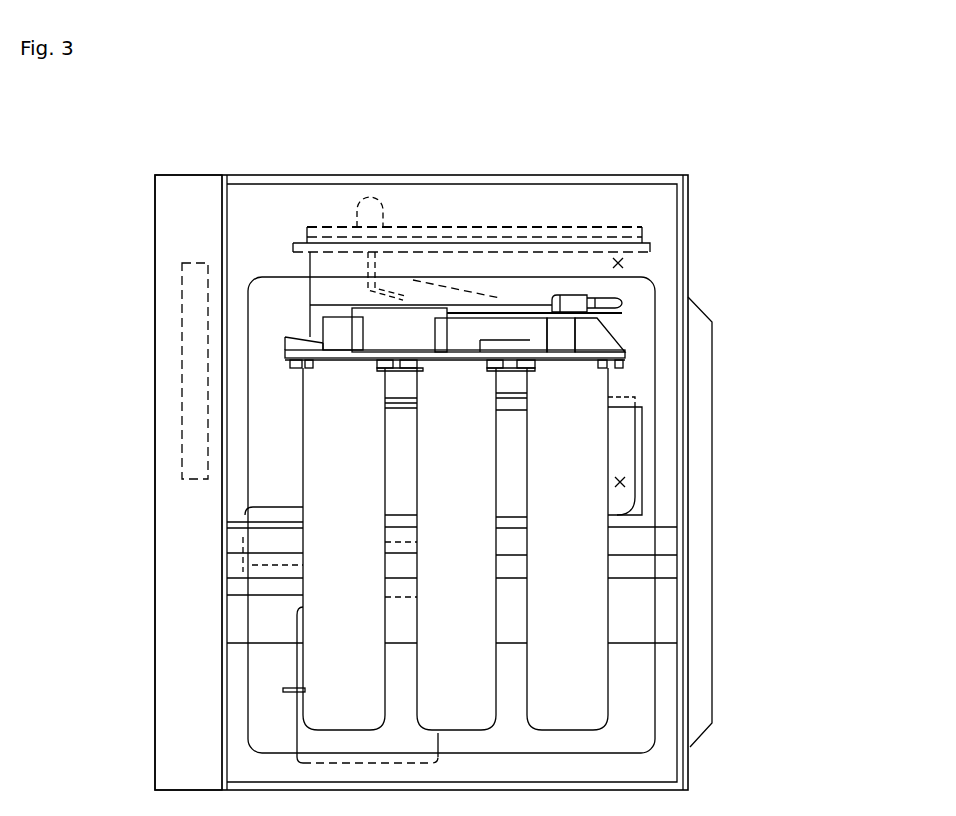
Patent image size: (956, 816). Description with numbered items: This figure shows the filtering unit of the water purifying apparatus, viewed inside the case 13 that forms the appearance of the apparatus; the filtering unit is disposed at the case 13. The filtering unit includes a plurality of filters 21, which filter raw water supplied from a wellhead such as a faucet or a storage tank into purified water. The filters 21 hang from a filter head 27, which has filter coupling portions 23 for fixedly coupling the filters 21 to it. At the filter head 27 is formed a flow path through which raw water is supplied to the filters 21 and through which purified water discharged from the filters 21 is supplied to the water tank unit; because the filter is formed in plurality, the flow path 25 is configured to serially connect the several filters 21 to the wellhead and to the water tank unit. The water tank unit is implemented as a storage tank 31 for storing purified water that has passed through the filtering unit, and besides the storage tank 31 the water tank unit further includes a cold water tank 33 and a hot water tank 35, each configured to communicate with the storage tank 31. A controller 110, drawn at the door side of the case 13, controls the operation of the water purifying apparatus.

The case 13 is at (132, 482).
The controller 110 is at (187, 363).
The filter 21 is at (320, 597).
The filter coupling portion 23 is at (398, 368).
The flow path 25 is at (530, 352).
The filter head 27 is at (420, 322).
The storage tank 31 is at (623, 264).
The cold water tank 33 is at (625, 482).
The hot water tank 35 is at (307, 738).